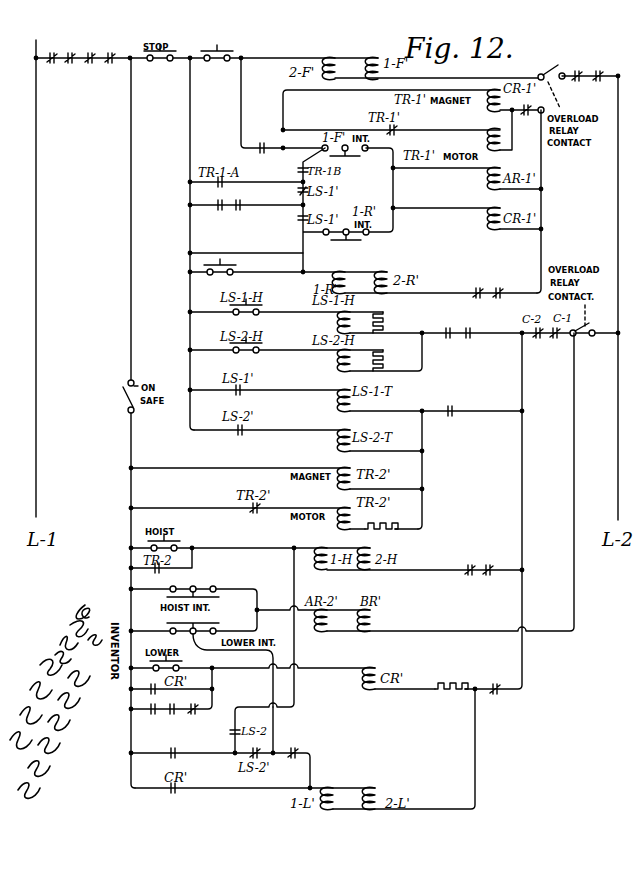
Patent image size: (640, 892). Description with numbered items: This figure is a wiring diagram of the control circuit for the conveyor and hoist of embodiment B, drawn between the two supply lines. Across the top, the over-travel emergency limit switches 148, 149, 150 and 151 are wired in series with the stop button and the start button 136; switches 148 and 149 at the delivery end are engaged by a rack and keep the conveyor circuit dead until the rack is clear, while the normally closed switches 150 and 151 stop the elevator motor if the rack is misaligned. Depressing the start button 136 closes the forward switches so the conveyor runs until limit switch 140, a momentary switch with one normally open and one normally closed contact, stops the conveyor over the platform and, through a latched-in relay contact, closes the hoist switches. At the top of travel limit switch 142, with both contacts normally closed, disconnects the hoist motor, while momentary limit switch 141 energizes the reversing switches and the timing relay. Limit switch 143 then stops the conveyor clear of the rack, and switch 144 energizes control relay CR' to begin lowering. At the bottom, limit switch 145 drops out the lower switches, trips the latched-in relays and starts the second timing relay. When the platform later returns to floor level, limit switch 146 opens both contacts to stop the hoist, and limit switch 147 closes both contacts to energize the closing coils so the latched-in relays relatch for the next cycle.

The start button 136 is at (222, 56).
The limit switch 140 is at (260, 138).
The limit switch 141 is at (220, 211).
The limit switch 142 is at (492, 560).
The limit switch 143 is at (502, 286).
The switch 144 is at (152, 702).
The limit switch 145 is at (452, 401).
The limit switch 146 is at (195, 711).
The limit switch 147 is at (448, 324).
The limit switch 148 is at (56, 54).
The limit switch 149 is at (71, 61).
The limit switch 150 is at (92, 54).
The limit switch 151 is at (110, 61).